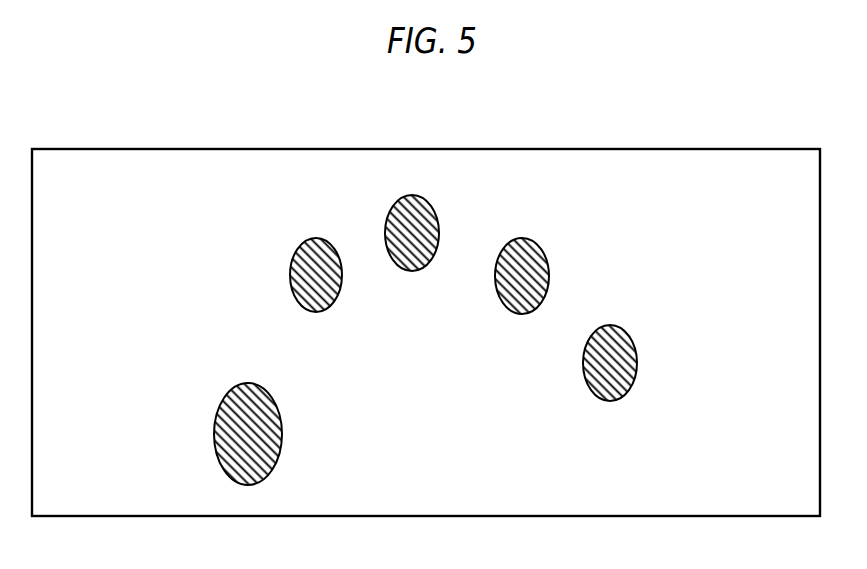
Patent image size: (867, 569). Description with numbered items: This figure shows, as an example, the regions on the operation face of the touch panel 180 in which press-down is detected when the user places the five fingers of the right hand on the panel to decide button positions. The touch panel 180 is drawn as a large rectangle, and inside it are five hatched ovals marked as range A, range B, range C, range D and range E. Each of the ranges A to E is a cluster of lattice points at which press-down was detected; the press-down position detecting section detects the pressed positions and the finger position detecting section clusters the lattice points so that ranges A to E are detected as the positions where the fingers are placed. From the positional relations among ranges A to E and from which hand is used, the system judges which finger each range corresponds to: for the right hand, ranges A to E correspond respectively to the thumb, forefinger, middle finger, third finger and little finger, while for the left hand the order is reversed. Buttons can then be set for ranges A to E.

The touch panel 180 is at (427, 149).
The range A is at (214, 436).
The range B is at (290, 276).
The range C is at (413, 272).
The range D is at (550, 276).
The range E is at (637, 360).